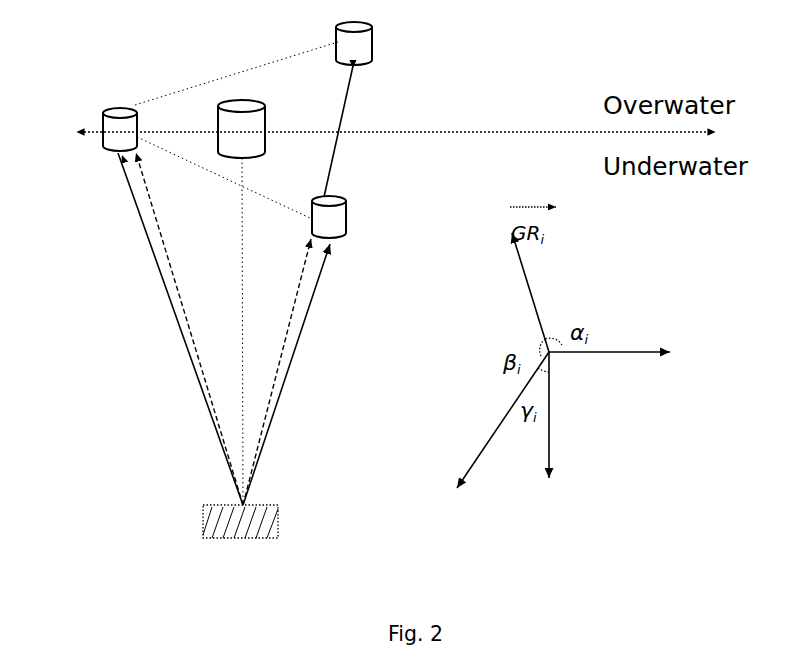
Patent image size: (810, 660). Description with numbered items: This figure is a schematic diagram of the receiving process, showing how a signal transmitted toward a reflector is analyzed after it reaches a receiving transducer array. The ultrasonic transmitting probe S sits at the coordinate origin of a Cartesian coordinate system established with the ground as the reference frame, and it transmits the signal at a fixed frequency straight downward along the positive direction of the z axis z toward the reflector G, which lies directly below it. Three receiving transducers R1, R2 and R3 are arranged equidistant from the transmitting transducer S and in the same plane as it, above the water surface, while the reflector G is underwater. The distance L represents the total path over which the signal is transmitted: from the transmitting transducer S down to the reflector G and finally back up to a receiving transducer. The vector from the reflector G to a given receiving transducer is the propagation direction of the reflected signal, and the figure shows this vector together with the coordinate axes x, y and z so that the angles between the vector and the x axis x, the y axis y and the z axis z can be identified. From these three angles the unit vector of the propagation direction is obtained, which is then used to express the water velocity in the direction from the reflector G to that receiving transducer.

The first receiving transducer R1 is at (120, 117).
The second receiving transducer R2 is at (342, 217).
The third receiving transducer R3 is at (368, 39).
The ultrasonic transmitting probe S is at (247, 123).
The reflector G is at (225, 521).
The signal transmission distance L is at (180, 329).
The x coordinate axis x is at (620, 364).
The y coordinate axis y is at (497, 426).
The z coordinate axis z is at (560, 427).